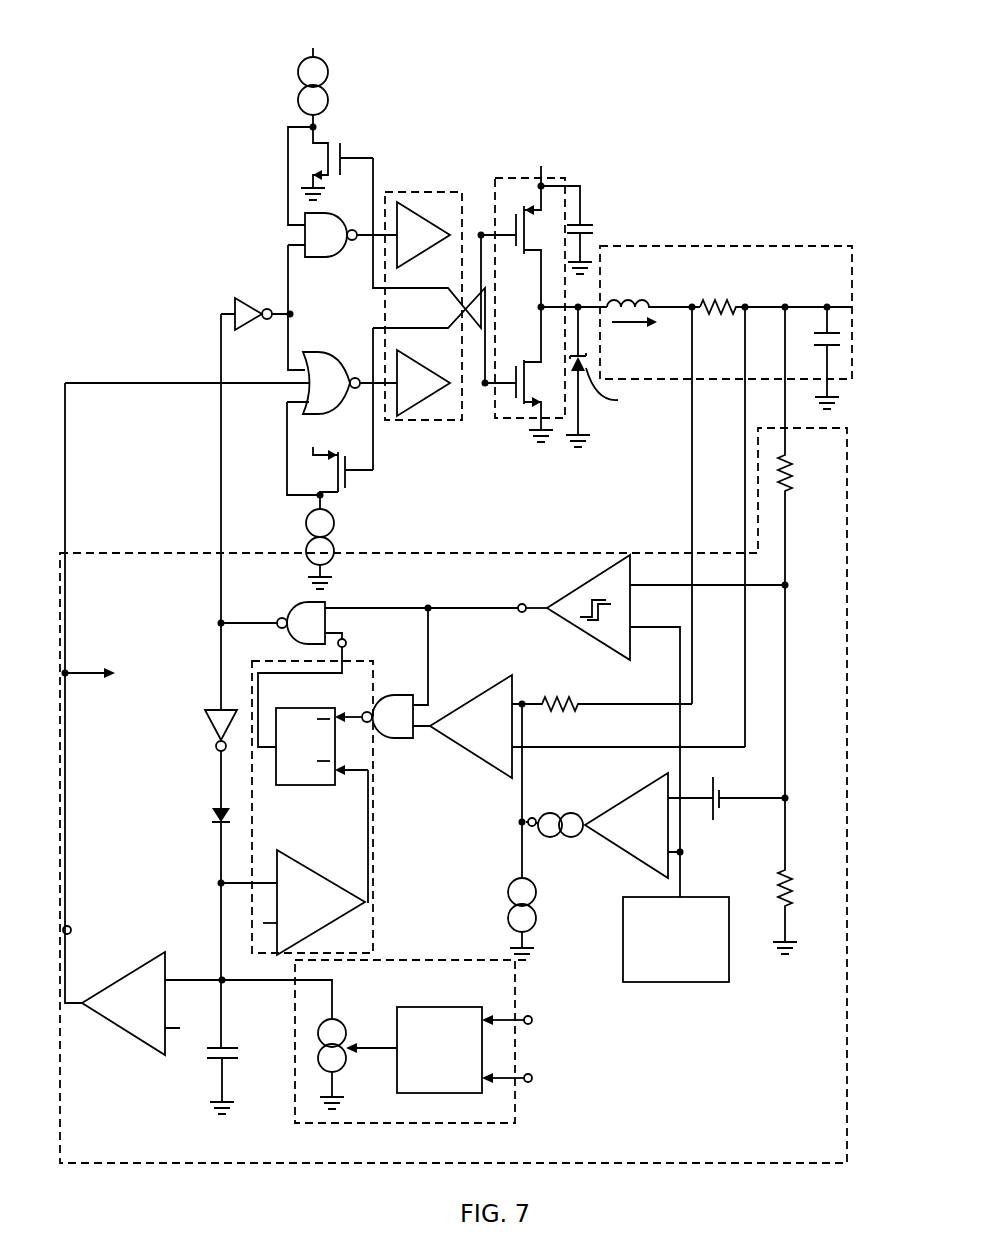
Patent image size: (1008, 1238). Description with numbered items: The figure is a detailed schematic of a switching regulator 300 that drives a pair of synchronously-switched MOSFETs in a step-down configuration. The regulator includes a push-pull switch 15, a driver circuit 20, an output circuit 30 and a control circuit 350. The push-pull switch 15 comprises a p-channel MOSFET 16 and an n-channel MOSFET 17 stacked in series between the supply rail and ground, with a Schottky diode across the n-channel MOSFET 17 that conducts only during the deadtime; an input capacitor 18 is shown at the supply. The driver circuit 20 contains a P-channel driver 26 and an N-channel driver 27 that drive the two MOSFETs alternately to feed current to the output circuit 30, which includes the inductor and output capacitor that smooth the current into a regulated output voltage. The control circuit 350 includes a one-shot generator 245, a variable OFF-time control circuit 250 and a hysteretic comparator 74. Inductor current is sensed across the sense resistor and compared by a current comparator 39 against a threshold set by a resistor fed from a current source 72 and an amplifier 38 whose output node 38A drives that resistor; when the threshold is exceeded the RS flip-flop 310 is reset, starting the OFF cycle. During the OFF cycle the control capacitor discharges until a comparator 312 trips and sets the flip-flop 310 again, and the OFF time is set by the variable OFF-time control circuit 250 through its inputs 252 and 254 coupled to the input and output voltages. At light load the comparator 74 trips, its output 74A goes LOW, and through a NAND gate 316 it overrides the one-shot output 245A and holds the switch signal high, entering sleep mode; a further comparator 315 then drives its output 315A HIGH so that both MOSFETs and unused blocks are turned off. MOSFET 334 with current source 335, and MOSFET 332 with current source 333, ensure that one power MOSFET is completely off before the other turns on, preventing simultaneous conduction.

The switching regulator 300 is at (643, 80).
The current source I_M2 333 is at (328, 78).
The MOSFET 332 is at (328, 142).
The driver circuit 20 is at (410, 192).
The P-channel driver 26 is at (432, 226).
The N-channel driver 27 is at (422, 402).
The push-pull switch 15 is at (497, 178).
The P-channel MOSFET 16 is at (533, 253).
The N-channel MOSFET 17 is at (530, 408).
The input capacitor CIN 18 is at (580, 220).
The output circuit 30 is at (741, 246).
The MOSFET 334 is at (348, 492).
The current source 335 is at (334, 527).
The control circuit 350 is at (432, 553).
The NAND gate 316 is at (323, 603).
The output of one-shot generator 245A is at (347, 645).
The hysteretic comparator 74 is at (612, 564).
The output of comparator 74 74A is at (521, 604).
The current comparator 39 is at (472, 700).
The controlled current source output 38A is at (531, 818).
The amplifier 38 is at (610, 842).
The current source I1 72 is at (536, 934).
The RS flip-flop 310 is at (289, 786).
The one-shot generator 245 is at (375, 858).
The comparator 312 is at (330, 924).
The output of comparator 315 315A is at (71, 930).
The comparator 315 is at (120, 1029).
The input 252 is at (529, 1015).
The input 254 is at (528, 1083).
The variable OFF-time control circuit 250 is at (390, 1123).